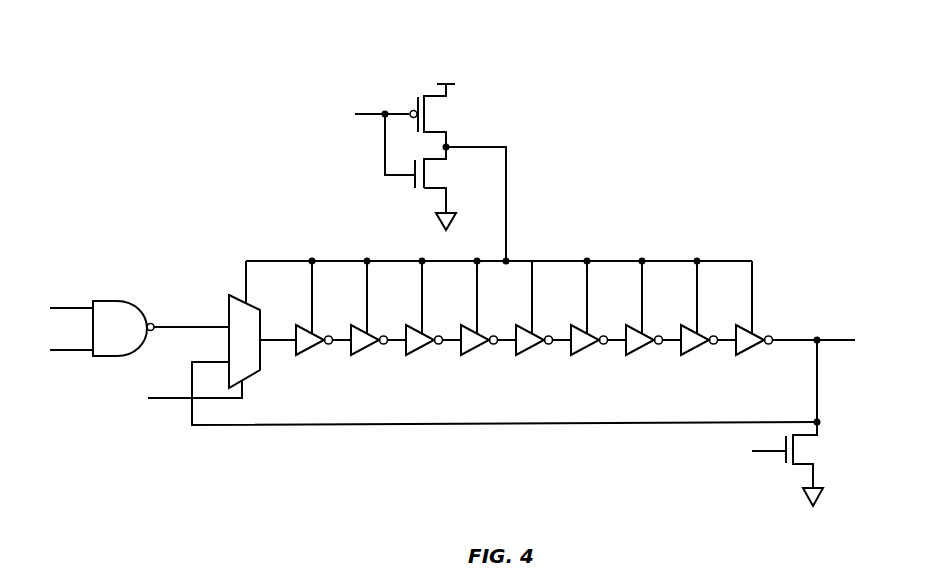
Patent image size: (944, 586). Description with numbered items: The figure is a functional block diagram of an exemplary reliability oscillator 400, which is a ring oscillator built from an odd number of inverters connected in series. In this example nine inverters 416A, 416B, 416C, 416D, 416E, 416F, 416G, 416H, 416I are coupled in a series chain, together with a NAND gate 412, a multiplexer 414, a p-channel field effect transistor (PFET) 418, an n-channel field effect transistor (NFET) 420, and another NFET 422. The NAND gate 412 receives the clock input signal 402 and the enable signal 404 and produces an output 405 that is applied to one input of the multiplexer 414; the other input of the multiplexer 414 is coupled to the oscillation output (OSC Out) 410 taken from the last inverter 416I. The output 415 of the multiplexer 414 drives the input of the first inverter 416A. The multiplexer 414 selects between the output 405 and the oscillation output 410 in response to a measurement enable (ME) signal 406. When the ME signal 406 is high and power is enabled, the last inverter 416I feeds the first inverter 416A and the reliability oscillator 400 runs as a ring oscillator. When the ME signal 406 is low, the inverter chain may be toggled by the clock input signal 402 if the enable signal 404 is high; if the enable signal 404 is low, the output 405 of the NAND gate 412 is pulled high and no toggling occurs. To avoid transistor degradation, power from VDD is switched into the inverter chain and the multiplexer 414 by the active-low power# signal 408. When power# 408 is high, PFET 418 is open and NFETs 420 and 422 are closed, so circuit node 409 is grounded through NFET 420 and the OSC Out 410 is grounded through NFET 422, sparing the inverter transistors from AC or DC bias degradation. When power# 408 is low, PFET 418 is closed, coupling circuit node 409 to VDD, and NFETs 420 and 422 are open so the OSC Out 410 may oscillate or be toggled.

The reliability oscillator 400 is at (185, 42).
The clock input signal 402 is at (71, 306).
The enable signal 404 is at (62, 353).
The output of the NAND gate 405 is at (184, 325).
The measurement enable (ME) signal 406 is at (165, 400).
The power# signal 408 is at (367, 116).
The circuit node 409 is at (563, 259).
The oscillation output (OSC Out) 410 is at (826, 343).
The NAND gate 412 is at (124, 300).
The multiplexer 414 is at (231, 293).
The output of the multiplexer 415 is at (277, 338).
The first inverter 416A is at (305, 356).
The inverter 416B is at (360, 356).
The inverter 416C is at (415, 356).
The inverter 416D is at (470, 356).
The inverter 416E is at (525, 356).
The inverter 416F is at (580, 356).
The inverter 416G is at (635, 356).
The inverter 416H is at (690, 356).
The last inverter 416I is at (745, 356).
The p-channel field effect transistor (PFET) 418 is at (440, 130).
The n-channel field effect transistor (NFET) 420 is at (440, 186).
The NFET 422 is at (812, 460).